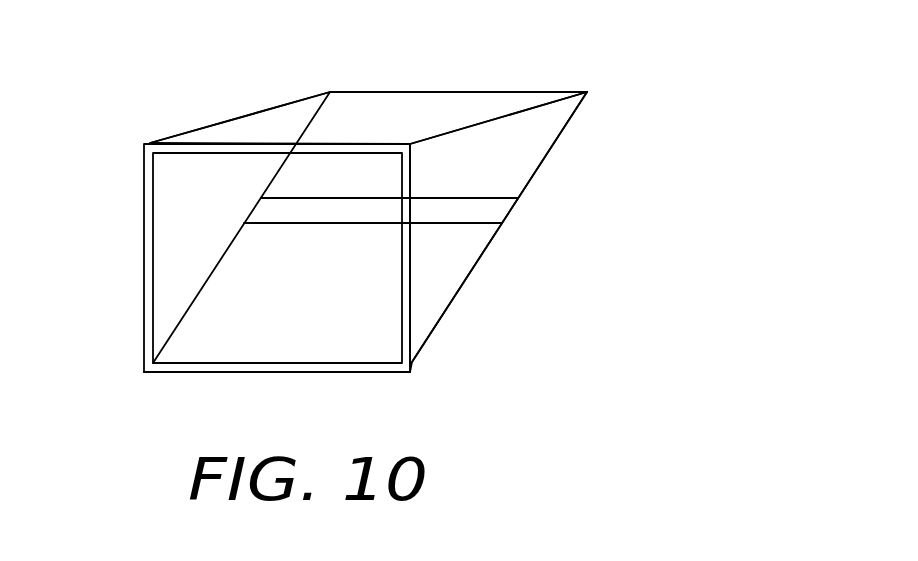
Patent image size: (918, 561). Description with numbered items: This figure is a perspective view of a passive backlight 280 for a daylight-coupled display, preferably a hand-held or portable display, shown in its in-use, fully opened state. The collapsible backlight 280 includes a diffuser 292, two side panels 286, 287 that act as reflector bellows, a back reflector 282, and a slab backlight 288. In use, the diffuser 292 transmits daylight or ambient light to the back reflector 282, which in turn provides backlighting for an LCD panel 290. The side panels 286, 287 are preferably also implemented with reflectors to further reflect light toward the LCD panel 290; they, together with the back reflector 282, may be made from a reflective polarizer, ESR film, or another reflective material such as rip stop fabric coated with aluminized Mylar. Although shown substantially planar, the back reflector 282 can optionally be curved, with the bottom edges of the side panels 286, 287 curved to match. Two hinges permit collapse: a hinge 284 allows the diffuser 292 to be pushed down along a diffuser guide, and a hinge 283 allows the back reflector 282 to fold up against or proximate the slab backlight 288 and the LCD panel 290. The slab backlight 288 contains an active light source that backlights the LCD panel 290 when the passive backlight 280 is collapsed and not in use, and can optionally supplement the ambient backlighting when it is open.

The passive backlight 280 is at (432, 221).
The back reflector 282 is at (355, 128).
The hinge 283 is at (373, 372).
The hinge 284 is at (558, 90).
The side panel 286 is at (527, 145).
The side panel 287 is at (180, 195).
The slab backlight 288 is at (407, 290).
The LCD panel 290 is at (148, 297).
The diffuser 292 is at (233, 132).